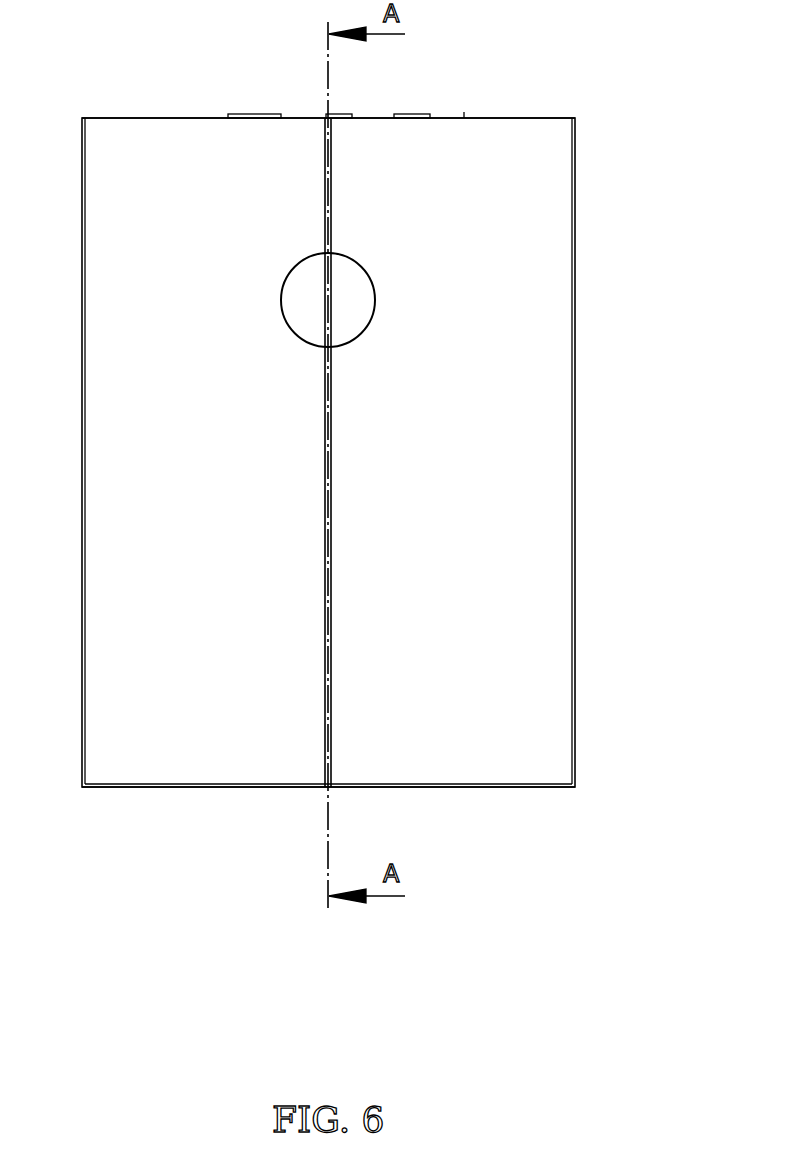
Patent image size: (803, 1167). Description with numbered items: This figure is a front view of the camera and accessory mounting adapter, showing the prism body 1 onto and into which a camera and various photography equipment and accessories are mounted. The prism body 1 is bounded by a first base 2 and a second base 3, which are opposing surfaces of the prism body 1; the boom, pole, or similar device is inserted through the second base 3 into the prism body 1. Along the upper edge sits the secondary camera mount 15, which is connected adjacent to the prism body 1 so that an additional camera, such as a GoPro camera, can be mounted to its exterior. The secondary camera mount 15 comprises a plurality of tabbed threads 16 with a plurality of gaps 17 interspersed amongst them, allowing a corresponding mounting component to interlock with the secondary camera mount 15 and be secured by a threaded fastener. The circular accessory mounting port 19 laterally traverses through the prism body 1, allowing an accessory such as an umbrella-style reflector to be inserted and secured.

The prism body 1 is at (109, 798).
The first base 2 is at (165, 118).
The second base 3 is at (510, 790).
The secondary camera mount 15 is at (463, 112).
The plurality of tabbed threads 16 is at (241, 117).
The plurality of gaps 17 is at (305, 118).
The accessory mounting port 19 is at (302, 308).